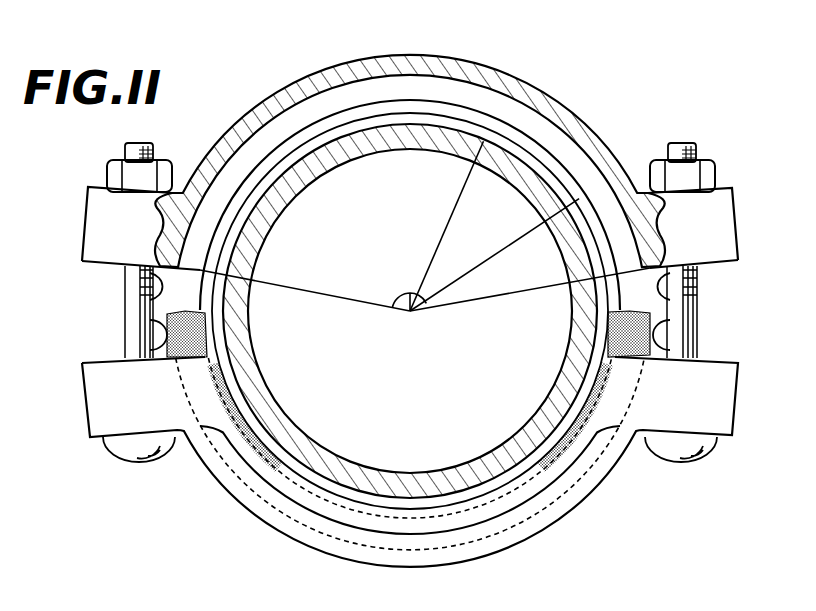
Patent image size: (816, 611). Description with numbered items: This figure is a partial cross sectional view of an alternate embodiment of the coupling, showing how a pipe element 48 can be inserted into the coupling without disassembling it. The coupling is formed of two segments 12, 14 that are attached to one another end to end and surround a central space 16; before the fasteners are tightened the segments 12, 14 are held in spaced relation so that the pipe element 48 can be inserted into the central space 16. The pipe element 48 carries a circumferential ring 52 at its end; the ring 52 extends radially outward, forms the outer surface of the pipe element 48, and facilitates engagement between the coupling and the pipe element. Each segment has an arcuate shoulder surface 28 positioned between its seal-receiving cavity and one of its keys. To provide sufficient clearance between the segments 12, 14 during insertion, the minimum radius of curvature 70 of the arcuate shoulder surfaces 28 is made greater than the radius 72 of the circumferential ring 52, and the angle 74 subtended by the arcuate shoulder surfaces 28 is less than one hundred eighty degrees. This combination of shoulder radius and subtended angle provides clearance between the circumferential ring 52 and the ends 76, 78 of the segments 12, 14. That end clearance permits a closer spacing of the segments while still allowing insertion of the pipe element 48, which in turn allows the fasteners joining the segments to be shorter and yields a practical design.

The segment 12 is at (508, 77).
The segment 14 is at (518, 533).
The central space 16 is at (415, 281).
The arcuate shoulder surface 28 is at (543, 150).
The pipe element 48 is at (300, 425).
The circumferential ring 52 is at (387, 502).
The minimum radius of curvature 70 is at (500, 248).
The radius 72 is at (438, 240).
The angle 74 is at (410, 313).
The end 76 is at (147, 321).
The end 78 is at (673, 327).